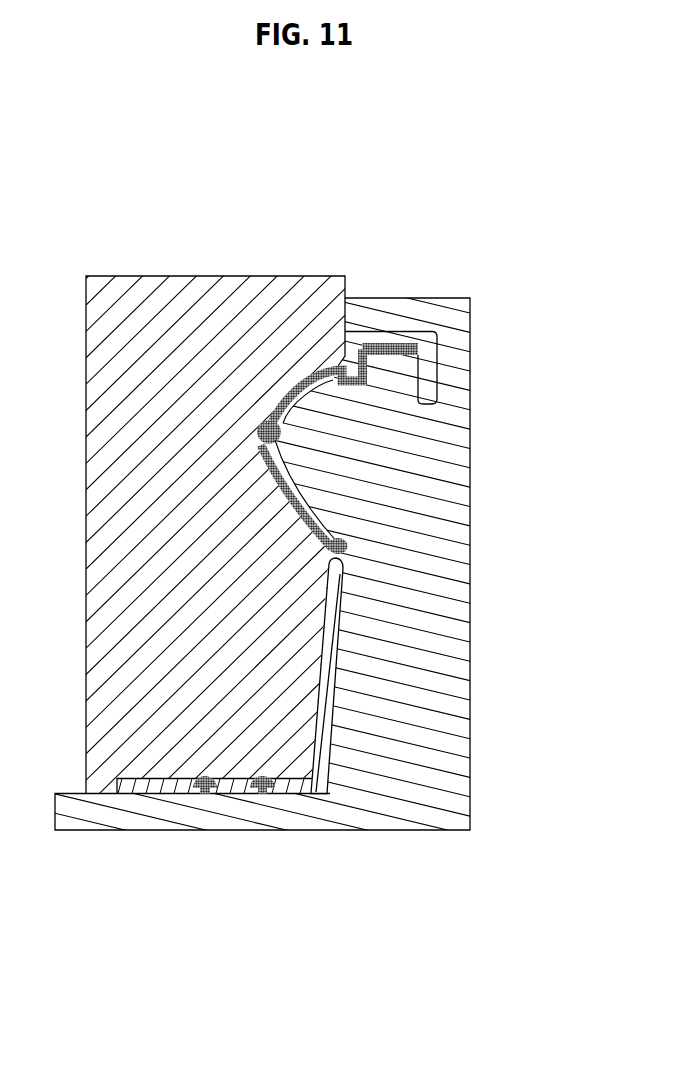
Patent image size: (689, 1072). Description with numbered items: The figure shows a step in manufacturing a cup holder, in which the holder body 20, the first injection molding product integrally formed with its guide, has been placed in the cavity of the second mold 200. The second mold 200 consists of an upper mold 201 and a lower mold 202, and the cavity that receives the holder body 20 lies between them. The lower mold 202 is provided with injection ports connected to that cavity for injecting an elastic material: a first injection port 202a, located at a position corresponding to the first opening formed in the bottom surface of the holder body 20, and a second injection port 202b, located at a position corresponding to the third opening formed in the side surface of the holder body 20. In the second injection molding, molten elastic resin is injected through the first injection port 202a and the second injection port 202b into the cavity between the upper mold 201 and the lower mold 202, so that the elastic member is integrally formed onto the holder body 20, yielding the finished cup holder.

The second mold 200 is at (447, 128).
The upper mold 201 is at (124, 288).
The lower mold 202 is at (463, 417).
The first injection port 202a is at (263, 795).
The second injection port 202b is at (346, 544).
The holder body 20 is at (392, 335).